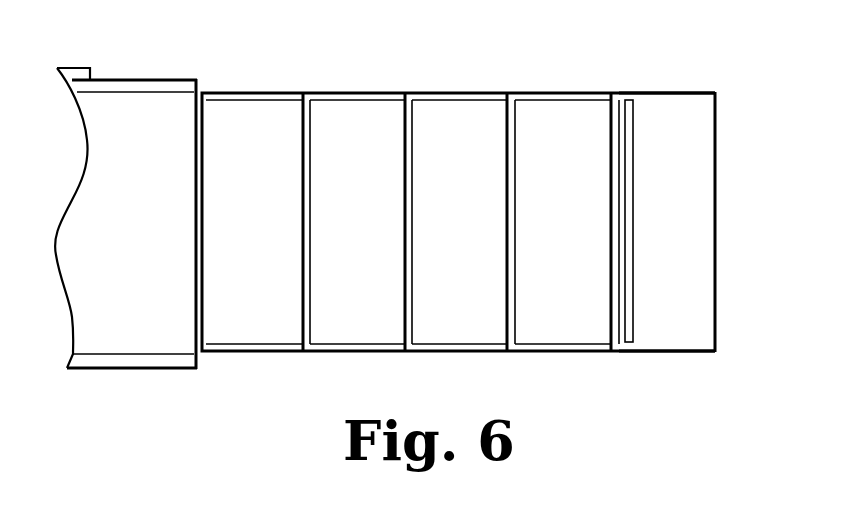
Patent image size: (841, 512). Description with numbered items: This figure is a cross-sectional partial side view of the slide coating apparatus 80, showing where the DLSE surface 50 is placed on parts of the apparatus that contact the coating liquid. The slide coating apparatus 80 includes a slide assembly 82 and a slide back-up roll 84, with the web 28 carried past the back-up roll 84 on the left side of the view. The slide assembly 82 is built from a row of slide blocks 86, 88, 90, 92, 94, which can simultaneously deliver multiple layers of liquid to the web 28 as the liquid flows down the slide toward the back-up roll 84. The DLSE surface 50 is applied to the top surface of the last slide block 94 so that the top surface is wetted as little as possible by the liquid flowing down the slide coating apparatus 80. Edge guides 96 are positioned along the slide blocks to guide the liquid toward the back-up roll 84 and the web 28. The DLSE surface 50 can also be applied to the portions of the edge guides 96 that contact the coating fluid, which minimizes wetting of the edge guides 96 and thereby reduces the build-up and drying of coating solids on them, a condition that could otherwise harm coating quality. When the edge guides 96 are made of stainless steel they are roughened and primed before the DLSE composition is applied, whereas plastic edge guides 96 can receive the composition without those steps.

The web 28 is at (92, 176).
The slide back-up roll 84 is at (162, 79).
The slide coating apparatus 80 is at (746, 135).
The slide assembly 82 is at (730, 258).
The slide block 86 is at (259, 94).
The slide block 88 is at (351, 94).
The slide block 90 is at (451, 94).
The slide block 92 is at (563, 94).
The edge guides 96 is at (392, 94).
The DLSE surface 50 is at (629, 112).
The last slide block 94 is at (683, 112).